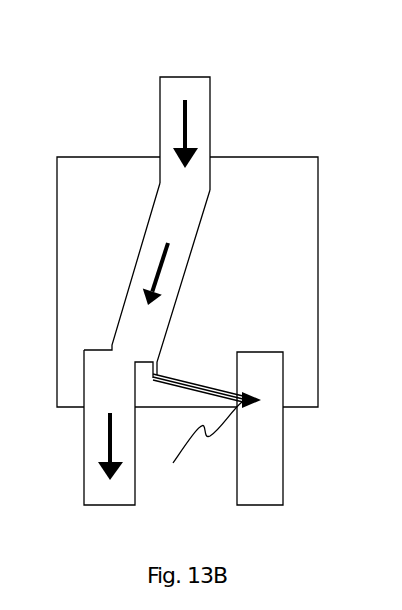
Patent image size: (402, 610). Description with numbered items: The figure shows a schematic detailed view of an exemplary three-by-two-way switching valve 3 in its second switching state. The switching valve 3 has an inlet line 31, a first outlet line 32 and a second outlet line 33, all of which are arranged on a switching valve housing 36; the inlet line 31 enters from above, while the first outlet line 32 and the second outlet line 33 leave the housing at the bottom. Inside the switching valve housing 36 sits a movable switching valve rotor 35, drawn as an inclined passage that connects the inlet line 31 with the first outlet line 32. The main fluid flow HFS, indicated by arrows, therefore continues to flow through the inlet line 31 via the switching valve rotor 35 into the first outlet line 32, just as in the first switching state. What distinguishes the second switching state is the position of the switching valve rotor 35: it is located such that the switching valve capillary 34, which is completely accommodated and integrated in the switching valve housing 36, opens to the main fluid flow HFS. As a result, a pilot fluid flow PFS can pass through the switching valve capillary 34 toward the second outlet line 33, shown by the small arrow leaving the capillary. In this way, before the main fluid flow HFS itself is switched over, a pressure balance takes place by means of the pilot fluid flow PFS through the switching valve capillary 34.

The 3/2-way switching valve 3 is at (272, 102).
The inlet line 31 is at (172, 115).
The first outlet line 32 is at (128, 495).
The second outlet line 33 is at (248, 477).
The switching valve capillary 34 is at (163, 373).
The switching valve rotor 35 is at (120, 317).
The switching valve housing 36 is at (125, 156).
The main fluid flow HFS is at (190, 123).
The pilot fluid flow PFS is at (208, 444).